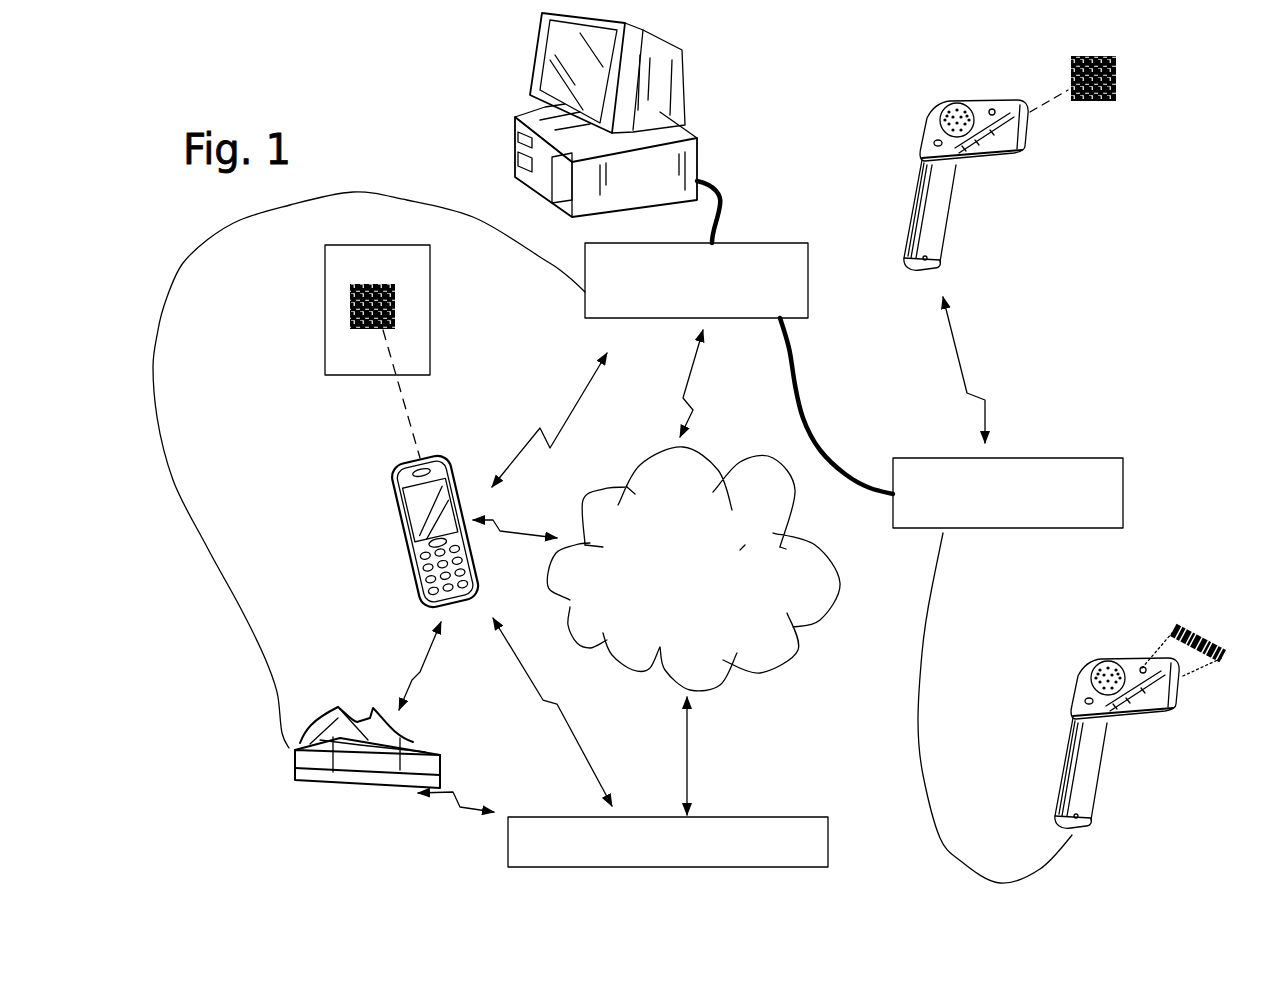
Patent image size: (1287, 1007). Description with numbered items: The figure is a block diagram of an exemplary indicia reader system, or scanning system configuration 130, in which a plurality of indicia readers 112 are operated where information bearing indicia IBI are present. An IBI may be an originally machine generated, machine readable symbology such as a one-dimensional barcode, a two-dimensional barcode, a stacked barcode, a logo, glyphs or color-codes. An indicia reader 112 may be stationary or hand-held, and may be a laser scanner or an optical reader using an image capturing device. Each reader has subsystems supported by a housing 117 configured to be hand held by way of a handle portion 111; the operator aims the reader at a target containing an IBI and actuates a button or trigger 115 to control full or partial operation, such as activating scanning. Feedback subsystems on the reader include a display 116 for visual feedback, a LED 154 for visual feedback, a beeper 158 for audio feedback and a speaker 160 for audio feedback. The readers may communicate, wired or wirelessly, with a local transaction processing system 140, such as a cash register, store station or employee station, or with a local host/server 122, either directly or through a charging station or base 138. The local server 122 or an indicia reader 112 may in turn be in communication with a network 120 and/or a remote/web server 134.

The handle portion 111 is at (934, 235).
The indicia reader 112 is at (903, 193).
The button or trigger 115 is at (958, 168).
The display 116 is at (408, 481).
The housing 117 is at (928, 125).
The network 120 is at (797, 657).
The local host/server 122 is at (766, 243).
The system 130 is at (297, 812).
The remote/web server 134 is at (770, 817).
The charging station or base 138 is at (295, 760).
The local transaction processing system 140 is at (520, 97).
The LED 154 is at (993, 109).
The beeper 158 is at (934, 142).
The speaker 160 is at (952, 104).
The information bearing indicia IBI is at (430, 313).